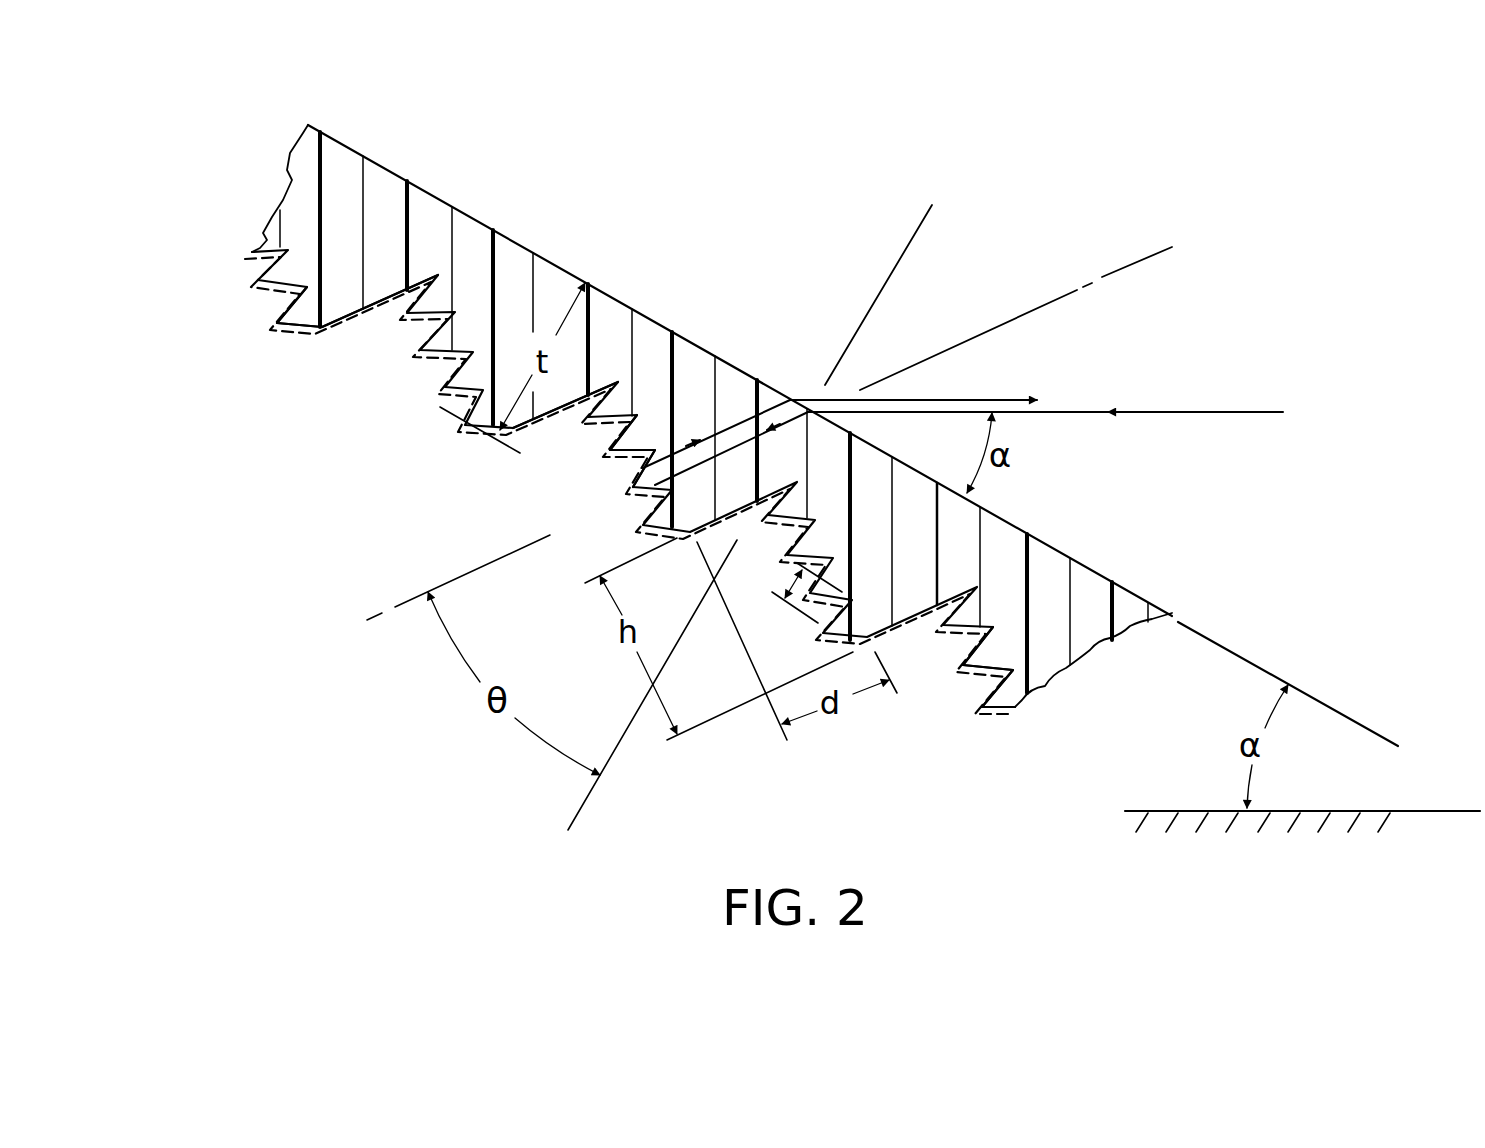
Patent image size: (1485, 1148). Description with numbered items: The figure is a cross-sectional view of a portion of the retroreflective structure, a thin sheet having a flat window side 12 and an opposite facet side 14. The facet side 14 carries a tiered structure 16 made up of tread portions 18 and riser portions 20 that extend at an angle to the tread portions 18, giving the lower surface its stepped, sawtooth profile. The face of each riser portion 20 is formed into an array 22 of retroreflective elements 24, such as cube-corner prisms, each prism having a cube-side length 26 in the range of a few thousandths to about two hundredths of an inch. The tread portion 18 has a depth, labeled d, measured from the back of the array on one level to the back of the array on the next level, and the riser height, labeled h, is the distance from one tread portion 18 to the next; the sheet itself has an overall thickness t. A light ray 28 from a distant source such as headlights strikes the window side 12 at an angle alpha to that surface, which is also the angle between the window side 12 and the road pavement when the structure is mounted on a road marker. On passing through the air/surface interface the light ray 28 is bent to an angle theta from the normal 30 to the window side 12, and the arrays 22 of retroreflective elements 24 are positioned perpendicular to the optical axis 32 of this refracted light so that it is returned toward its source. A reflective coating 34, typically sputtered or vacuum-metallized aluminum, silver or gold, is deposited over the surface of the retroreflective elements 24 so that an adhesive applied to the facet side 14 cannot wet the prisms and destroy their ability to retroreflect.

The window side 12 is at (536, 249).
The facet side 14 is at (441, 383).
The tiered structure 16 is at (375, 306).
The tread portion 18 is at (558, 415).
The riser portion 20 is at (975, 677).
The array 22 is at (630, 471).
The retroreflective elements 24 is at (297, 327).
The cube-side length 26 is at (783, 585).
The light ray 28 is at (1281, 410).
The normal 30 is at (912, 241).
The optical axis 32 is at (1130, 264).
The reflective coating 34 is at (257, 277).